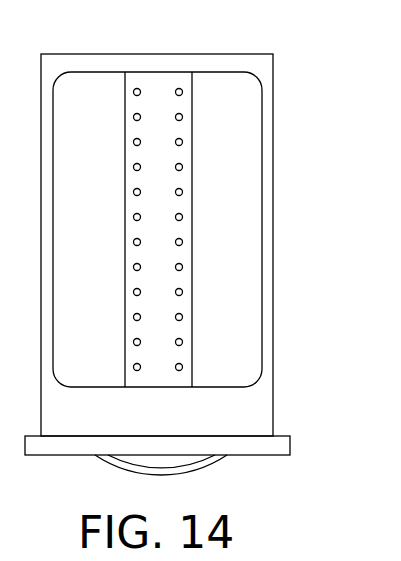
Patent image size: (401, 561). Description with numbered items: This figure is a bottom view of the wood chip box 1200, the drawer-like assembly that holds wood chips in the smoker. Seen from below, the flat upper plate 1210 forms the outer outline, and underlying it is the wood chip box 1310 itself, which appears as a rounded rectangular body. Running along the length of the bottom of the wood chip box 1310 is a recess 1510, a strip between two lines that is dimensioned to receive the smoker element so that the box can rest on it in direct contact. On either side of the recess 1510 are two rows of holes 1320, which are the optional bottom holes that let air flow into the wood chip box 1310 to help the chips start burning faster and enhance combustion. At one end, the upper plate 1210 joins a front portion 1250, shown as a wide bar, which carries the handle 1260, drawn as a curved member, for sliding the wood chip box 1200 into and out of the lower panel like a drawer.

The wood chip box 1200 is at (307, 103).
The upper plate 1210 is at (273, 197).
The wood chip box 1310 is at (253, 228).
The holes 1320 is at (183, 292).
The recess 1510 is at (158, 88).
The front portion 1250 is at (291, 444).
The handle 1260 is at (196, 467).